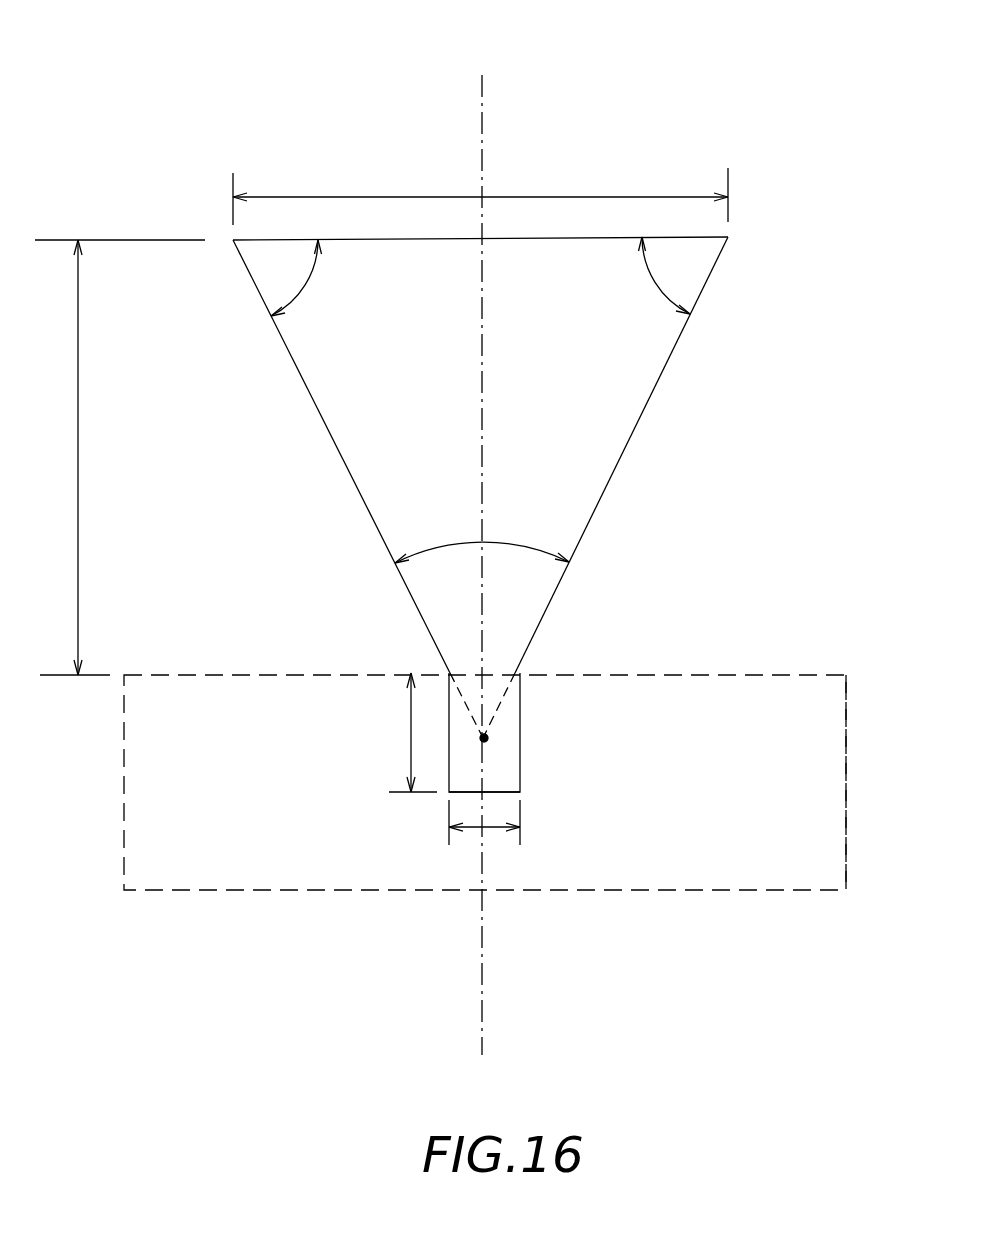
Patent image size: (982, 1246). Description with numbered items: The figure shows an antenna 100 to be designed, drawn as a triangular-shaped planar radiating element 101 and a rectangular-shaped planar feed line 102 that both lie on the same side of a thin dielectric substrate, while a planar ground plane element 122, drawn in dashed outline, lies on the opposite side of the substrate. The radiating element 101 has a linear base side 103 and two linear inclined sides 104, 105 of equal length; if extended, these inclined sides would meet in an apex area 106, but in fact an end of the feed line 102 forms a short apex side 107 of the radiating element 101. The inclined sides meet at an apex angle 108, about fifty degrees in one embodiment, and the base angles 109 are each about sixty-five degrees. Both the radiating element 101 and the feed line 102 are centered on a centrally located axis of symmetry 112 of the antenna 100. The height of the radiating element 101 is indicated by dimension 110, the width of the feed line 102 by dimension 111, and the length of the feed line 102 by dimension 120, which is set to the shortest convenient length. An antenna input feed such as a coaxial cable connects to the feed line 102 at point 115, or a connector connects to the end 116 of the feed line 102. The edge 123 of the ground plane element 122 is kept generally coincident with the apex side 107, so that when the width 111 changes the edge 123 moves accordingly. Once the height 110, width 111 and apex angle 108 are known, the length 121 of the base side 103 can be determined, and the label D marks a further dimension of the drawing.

The antenna 100 is at (698, 117).
The radiating element 101 is at (480, 455).
The feed line 102 is at (500, 777).
The base side 103 is at (537, 240).
The inclined side 104 is at (355, 466).
The inclined side 105 is at (622, 450).
The apex area 106 is at (475, 680).
The apex side 107 is at (495, 665).
The apex angle 108 is at (512, 543).
The angles 109 is at (318, 272).
The height 110 is at (80, 514).
The width 111 is at (505, 828).
The axis of symmetry 112 is at (483, 183).
The point 115 is at (487, 739).
The end of feed line 116 is at (503, 793).
The length of feed line 120 is at (411, 746).
The length of base side 121 is at (366, 198).
The ground plane element 122 is at (825, 832).
The edge of ground plane element 123 is at (733, 671).
The diameter D is at (612, 392).